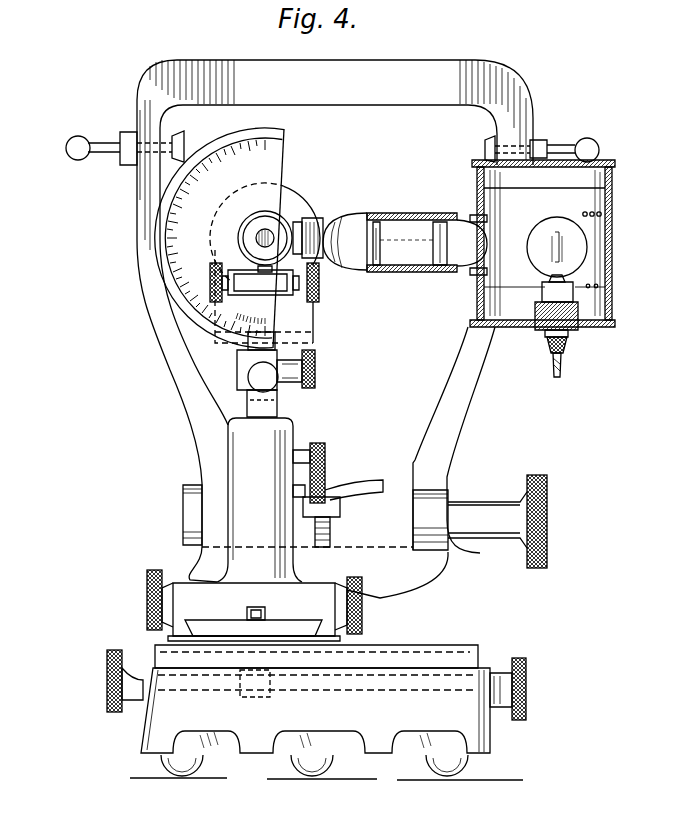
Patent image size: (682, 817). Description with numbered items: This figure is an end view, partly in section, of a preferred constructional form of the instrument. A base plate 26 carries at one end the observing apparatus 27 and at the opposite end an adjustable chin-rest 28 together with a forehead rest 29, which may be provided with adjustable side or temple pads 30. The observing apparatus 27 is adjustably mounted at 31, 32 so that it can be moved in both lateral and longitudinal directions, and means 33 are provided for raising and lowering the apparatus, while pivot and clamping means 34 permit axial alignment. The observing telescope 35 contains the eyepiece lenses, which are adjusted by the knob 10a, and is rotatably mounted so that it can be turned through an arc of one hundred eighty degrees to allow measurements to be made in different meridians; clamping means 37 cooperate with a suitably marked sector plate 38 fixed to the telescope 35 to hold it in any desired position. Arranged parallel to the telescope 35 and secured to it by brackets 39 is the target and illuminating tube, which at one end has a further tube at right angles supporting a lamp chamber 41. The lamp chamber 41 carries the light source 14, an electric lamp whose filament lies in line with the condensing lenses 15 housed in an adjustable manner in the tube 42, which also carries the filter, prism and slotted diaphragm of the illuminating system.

The forehead rest 29 is at (233, 72).
The temple pads 30 is at (184, 143).
The sector plate 38 is at (275, 162).
The observing telescope 35 is at (252, 234).
The observing apparatus 27 is at (310, 200).
The knob 10a is at (240, 278).
The brackets 39 is at (322, 272).
The tube 42 is at (400, 273).
The condensing lenses 15 is at (432, 244).
The lamp chamber 41 is at (612, 258).
The light source 14 is at (541, 230).
The pivot and clamping means 34 is at (315, 362).
The clamping means 37 is at (285, 388).
The raising and lowering means 33 is at (328, 462).
The chin-rest 28 is at (355, 490).
The adjustable mounting 32 is at (160, 572).
The adjustable mounting 31 is at (120, 650).
The base plate 26 is at (480, 722).